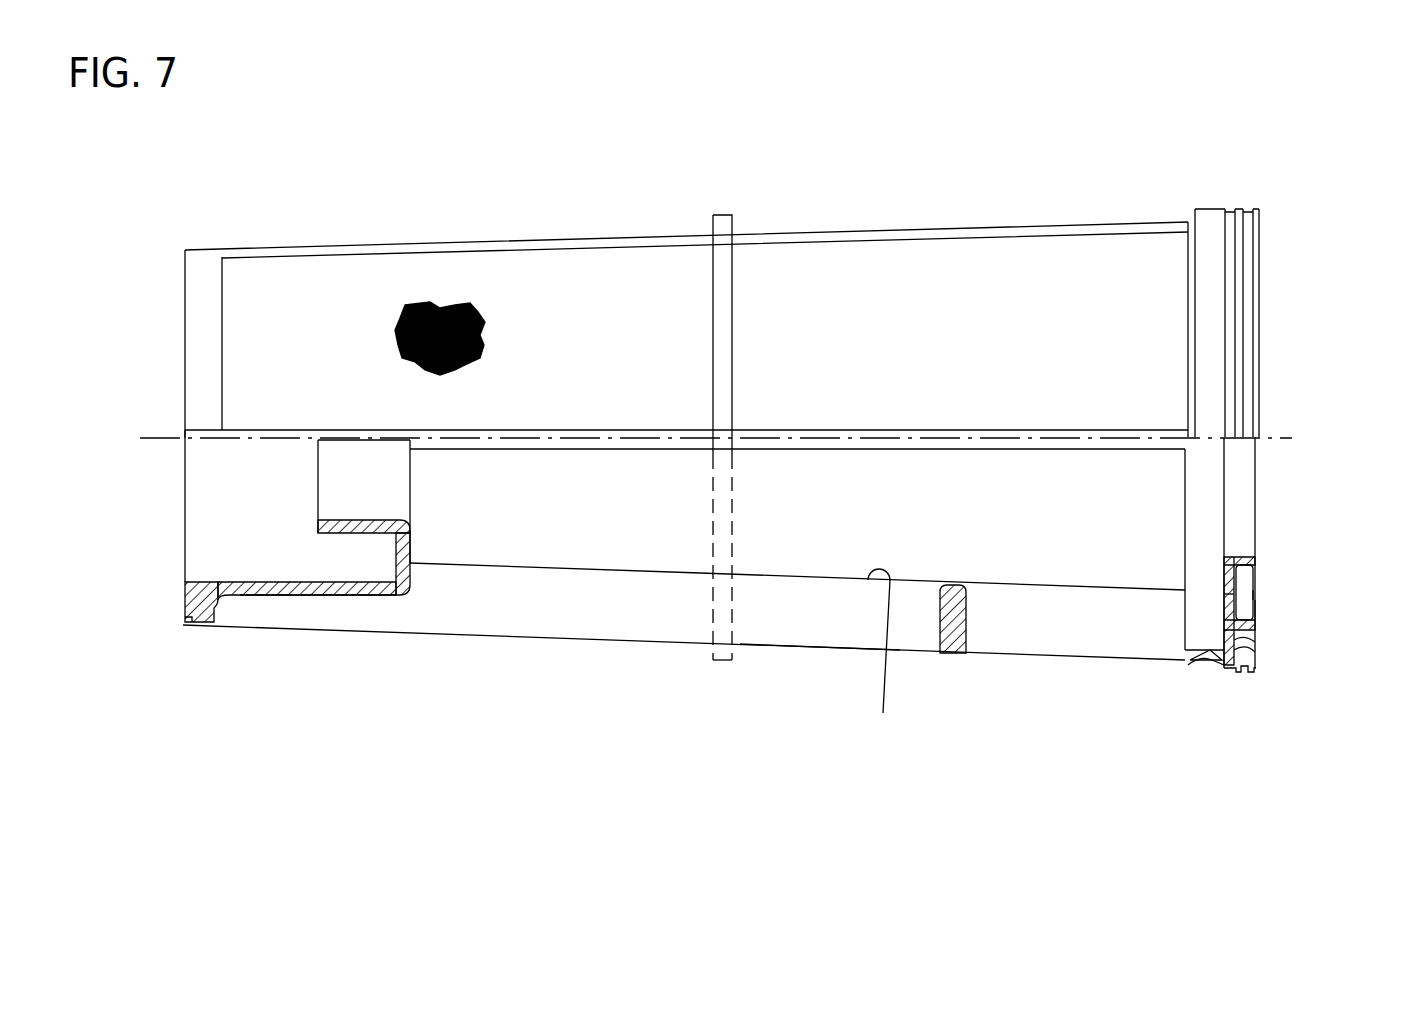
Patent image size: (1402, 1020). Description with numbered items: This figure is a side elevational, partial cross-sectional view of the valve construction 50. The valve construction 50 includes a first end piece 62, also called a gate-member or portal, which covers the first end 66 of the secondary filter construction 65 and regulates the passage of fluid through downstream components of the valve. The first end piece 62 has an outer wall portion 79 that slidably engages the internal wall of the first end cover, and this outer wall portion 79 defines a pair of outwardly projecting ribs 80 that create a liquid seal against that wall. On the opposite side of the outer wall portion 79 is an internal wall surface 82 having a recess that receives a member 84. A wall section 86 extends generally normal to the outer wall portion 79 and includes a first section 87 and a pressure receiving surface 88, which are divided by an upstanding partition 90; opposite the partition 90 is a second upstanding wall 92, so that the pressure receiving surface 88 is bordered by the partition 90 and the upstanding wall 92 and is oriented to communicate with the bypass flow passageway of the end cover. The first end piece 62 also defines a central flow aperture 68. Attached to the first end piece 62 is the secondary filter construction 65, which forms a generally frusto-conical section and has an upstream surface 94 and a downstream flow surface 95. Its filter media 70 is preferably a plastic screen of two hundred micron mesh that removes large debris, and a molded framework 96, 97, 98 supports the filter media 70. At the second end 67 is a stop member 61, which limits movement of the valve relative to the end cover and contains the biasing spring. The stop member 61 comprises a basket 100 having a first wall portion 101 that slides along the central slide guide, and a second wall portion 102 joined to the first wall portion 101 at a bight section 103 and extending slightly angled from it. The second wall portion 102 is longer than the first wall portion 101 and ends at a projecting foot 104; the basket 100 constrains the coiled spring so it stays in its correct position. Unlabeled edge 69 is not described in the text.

The valve construction 50 is at (1027, 180).
The first end 66 is at (1187, 248).
The outwardly projecting ribs 80 is at (1258, 208).
The filter media 70 is at (458, 308).
The molded framework 98 is at (718, 666).
The secondary filter construction 65 is at (495, 640).
The stop member 61 is at (391, 621).
The inner wall 69 is at (568, 545).
The molded framework 97 is at (805, 578).
The downstream flow surface 95 is at (797, 652).
The upstream surface 94 is at (882, 659).
The molded framework 96 is at (953, 640).
The second end 67 is at (412, 482).
The first wall portion 101 is at (342, 527).
The bight section 103 is at (396, 560).
The second wall portion 102 is at (313, 600).
The basket 100 is at (357, 600).
The projecting foot 104 is at (188, 624).
The central flow aperture 68 is at (1228, 560).
The second upstanding wall 92 is at (1245, 560).
The pressure receiving surface 88 is at (1234, 597).
The wall section 86 is at (1222, 598).
The first end piece 62 is at (1285, 608).
The upstanding partition 90 is at (1258, 630).
The first section 87 is at (1258, 646).
The member 84 is at (1184, 653).
The internal wall surface 82 is at (1202, 662).
The outer wall portion 79 is at (1215, 667).